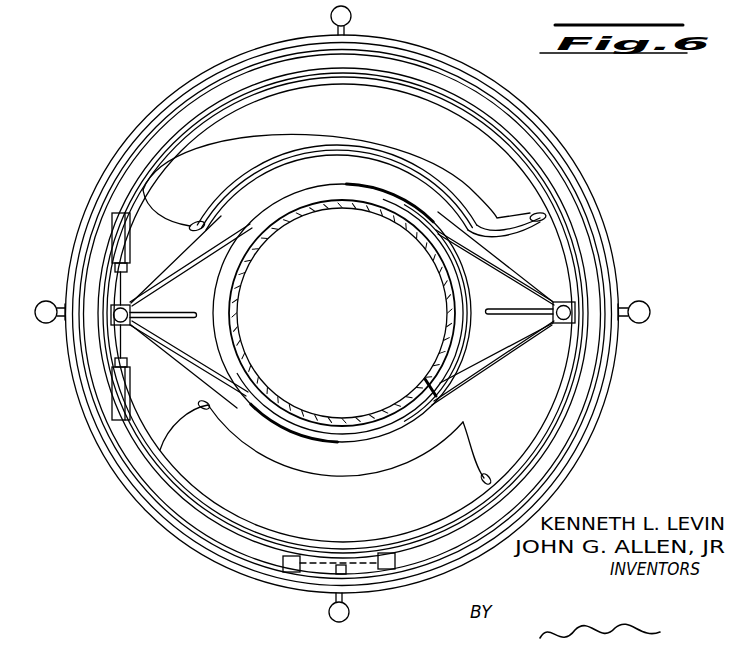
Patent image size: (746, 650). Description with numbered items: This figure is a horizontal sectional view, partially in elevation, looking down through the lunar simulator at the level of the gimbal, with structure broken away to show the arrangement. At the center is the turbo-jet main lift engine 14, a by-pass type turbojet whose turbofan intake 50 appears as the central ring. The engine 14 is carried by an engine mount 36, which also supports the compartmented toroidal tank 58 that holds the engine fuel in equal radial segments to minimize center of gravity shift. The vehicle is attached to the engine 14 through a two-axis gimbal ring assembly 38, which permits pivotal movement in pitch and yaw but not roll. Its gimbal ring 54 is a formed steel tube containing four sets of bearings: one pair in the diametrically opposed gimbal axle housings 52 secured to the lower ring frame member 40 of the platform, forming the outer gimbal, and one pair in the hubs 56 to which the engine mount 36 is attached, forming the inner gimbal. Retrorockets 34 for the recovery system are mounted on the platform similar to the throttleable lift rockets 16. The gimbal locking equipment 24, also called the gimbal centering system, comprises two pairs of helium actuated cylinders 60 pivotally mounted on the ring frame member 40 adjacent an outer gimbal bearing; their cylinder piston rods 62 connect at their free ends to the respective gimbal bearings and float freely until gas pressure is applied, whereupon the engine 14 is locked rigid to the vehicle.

The turbo-jet main lift engine 14 is at (432, 388).
The throttleable lift rockets 16 is at (42, 303).
The gimbal locking equipment 24 is at (104, 281).
The retrorockets 34 is at (352, 16).
The engine mount 36 is at (519, 268).
The two-axis gimbal ring assembly 38 is at (116, 486).
The lower ring frame member 40 is at (82, 228).
The turbofan intake 50 is at (322, 220).
The gimbal axle housings 52 is at (340, 48).
The gimbal ring 54 is at (112, 207).
The hubs 56 is at (167, 281).
The compartmented toroidal tank 58 is at (457, 155).
The helium actuated cylinders 60 is at (130, 243).
The cylinder piston rods 62 is at (115, 366).